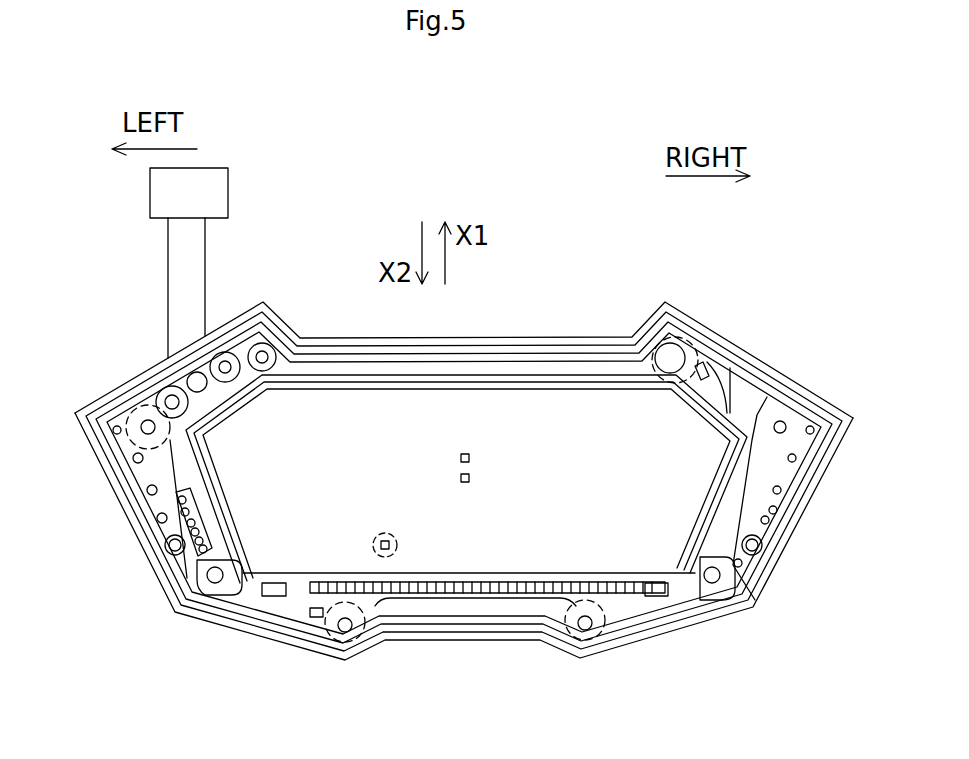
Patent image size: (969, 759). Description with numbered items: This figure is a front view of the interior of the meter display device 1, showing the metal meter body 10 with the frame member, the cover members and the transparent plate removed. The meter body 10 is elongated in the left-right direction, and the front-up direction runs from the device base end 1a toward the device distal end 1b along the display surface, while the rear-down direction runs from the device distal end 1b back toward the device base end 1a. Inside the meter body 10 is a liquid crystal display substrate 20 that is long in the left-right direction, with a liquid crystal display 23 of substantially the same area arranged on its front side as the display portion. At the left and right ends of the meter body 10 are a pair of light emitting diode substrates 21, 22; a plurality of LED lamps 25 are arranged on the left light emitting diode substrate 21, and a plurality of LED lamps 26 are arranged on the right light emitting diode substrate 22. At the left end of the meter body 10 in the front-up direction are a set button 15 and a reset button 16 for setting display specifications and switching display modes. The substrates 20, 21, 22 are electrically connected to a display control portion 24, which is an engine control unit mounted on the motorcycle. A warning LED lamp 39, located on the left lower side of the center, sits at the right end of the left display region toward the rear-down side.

The meter display device 1 is at (703, 302).
The device base end 1a is at (433, 640).
The device distal end 1b is at (513, 335).
The meter body 10 is at (563, 340).
The set button 15 is at (172, 404).
The reset button 16 is at (170, 372).
The liquid crystal display substrate 20 is at (468, 598).
The light emitting diode substrate 21 is at (157, 505).
The light emitting diode substrate 22 is at (775, 512).
The liquid crystal display 23 is at (500, 490).
The display control portion 24 is at (189, 263).
The LED lamps 25 is at (148, 490).
The LED lamps 26 is at (781, 490).
The warning LED lamp 39 is at (372, 545).